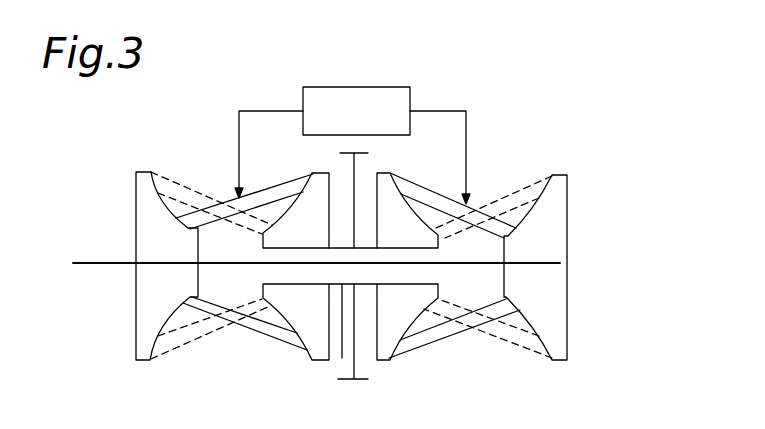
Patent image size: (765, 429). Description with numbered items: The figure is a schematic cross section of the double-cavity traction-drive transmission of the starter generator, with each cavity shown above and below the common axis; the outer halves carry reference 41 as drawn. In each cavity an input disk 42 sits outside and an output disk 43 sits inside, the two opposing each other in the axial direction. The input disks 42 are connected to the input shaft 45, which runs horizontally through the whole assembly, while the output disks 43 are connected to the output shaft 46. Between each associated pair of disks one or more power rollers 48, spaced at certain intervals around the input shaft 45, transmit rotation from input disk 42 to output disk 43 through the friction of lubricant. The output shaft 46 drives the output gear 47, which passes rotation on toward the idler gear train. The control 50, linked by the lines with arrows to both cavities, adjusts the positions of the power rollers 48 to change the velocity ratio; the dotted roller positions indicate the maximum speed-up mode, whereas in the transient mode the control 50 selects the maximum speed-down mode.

The variable-diameter pulley 41 is at (353, 233).
The input disk 42 is at (136, 180).
The output disk 43 is at (322, 173).
The input shaft 45 is at (103, 262).
The output shaft 46 is at (342, 358).
The output gear 47 is at (356, 362).
The power roller 48 is at (280, 218).
The control 50 is at (374, 87).